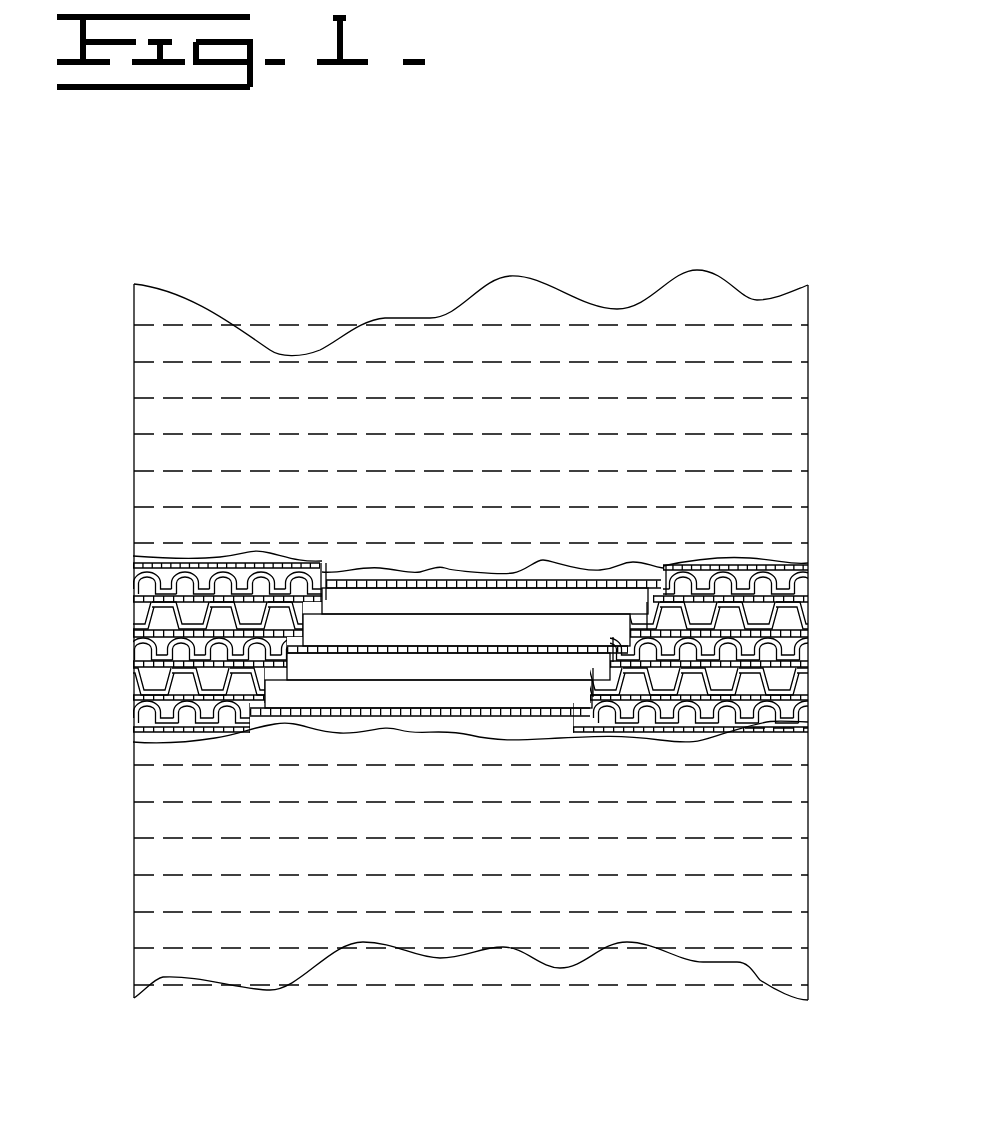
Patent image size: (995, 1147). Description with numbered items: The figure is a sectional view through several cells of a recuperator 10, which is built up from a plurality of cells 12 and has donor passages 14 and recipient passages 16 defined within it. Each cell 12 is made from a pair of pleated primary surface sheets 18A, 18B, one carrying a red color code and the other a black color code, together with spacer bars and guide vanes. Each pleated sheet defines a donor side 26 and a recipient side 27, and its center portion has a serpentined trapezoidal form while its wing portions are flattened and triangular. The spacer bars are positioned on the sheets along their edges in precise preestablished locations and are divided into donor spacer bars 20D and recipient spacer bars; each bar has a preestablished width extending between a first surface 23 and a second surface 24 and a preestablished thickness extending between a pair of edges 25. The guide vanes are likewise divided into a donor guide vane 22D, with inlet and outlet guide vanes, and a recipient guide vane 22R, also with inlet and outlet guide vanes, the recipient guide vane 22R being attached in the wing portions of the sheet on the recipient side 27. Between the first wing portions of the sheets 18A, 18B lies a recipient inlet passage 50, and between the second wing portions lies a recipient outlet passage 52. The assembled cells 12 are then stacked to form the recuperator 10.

The recuperator 10 is at (620, 262).
The cell 12 is at (137, 702).
The donor passage 14 is at (573, 593).
The recipient passage 16 is at (498, 595).
The primary surface sheet 18A is at (408, 588).
The primary surface sheet 18B is at (427, 573).
The donor spacer bar 20D is at (133, 606).
The recipient guide vane 22R is at (808, 586).
The donor guide vane 22D is at (807, 627).
The first surface 23 is at (135, 662).
The second surface 24 is at (133, 678).
The edge 25 is at (135, 585).
The donor side 26 is at (323, 577).
The recipient side 27 is at (352, 597).
The recipient inlet passage 50 is at (172, 685).
The recipient outlet passage 52 is at (753, 680).